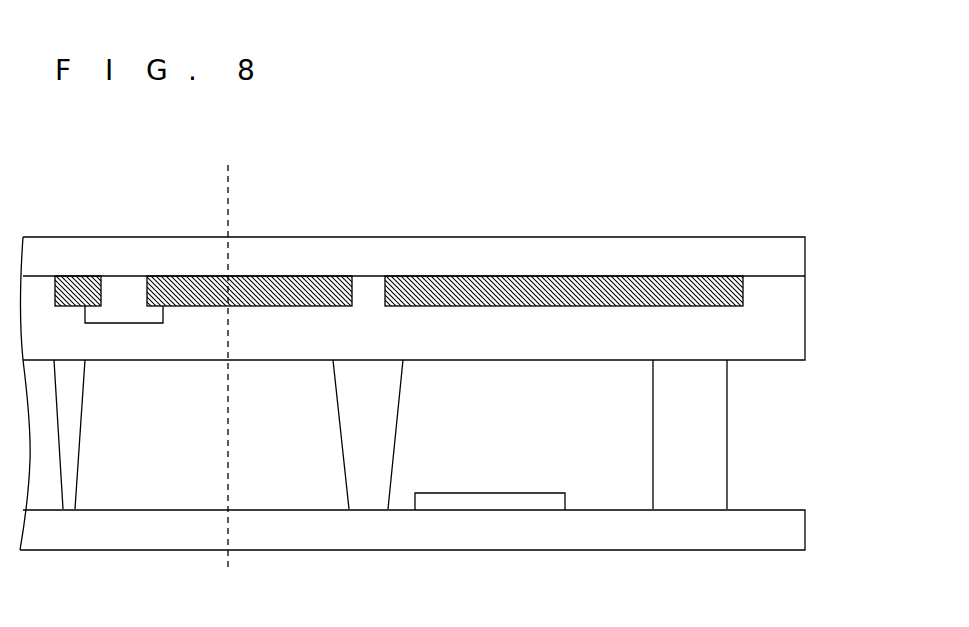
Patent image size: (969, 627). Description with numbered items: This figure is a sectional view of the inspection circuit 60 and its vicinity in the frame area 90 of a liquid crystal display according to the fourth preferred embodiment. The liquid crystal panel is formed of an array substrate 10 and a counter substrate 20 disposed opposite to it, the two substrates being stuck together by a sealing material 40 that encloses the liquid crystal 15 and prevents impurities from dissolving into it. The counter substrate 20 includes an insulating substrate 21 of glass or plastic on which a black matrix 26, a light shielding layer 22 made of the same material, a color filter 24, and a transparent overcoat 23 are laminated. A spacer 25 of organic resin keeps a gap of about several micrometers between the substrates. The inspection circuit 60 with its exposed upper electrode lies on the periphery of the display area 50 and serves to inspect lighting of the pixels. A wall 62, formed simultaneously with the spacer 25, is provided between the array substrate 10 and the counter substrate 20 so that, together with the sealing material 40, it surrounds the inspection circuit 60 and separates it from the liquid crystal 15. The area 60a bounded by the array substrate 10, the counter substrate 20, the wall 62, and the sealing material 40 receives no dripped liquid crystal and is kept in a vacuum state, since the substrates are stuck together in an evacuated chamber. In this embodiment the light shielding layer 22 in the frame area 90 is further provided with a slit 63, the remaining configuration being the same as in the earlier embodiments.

The array substrate 10 is at (557, 528).
The liquid crystal 15 is at (186, 493).
The counter substrate 20 is at (813, 237).
The insulating substrate 21 is at (728, 267).
The light shielding layer 22 is at (170, 287).
The overcoat 23 is at (525, 328).
The color filter 24 is at (122, 290).
The spacer 25 is at (70, 495).
The black matrix 26 is at (80, 288).
The sealing material 40 is at (697, 500).
The display area 50 is at (228, 187).
The inspection circuit 60 is at (492, 502).
The area 60a is at (411, 473).
The wall 62 is at (357, 493).
The slit 63 is at (376, 292).
The frame area 90 is at (807, 188).